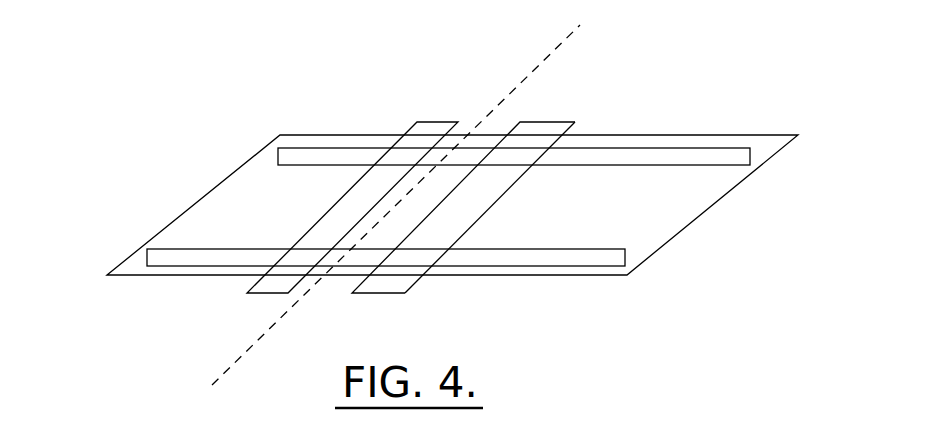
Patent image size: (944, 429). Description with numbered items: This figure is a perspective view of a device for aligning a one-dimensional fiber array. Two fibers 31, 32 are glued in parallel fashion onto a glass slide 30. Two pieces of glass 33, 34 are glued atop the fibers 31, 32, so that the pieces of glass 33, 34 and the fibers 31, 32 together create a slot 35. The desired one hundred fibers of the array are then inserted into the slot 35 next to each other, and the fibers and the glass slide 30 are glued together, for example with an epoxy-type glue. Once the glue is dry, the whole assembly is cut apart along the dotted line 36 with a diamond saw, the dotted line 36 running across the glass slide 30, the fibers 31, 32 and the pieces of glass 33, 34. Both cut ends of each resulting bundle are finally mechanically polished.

The glass slide 30 is at (214, 198).
The fiber 31 is at (545, 143).
The fiber 32 is at (412, 272).
The piece of glass 33 is at (332, 227).
The piece of glass 34 is at (463, 227).
The slot 35 is at (490, 207).
The dotted line 36 is at (396, 205).